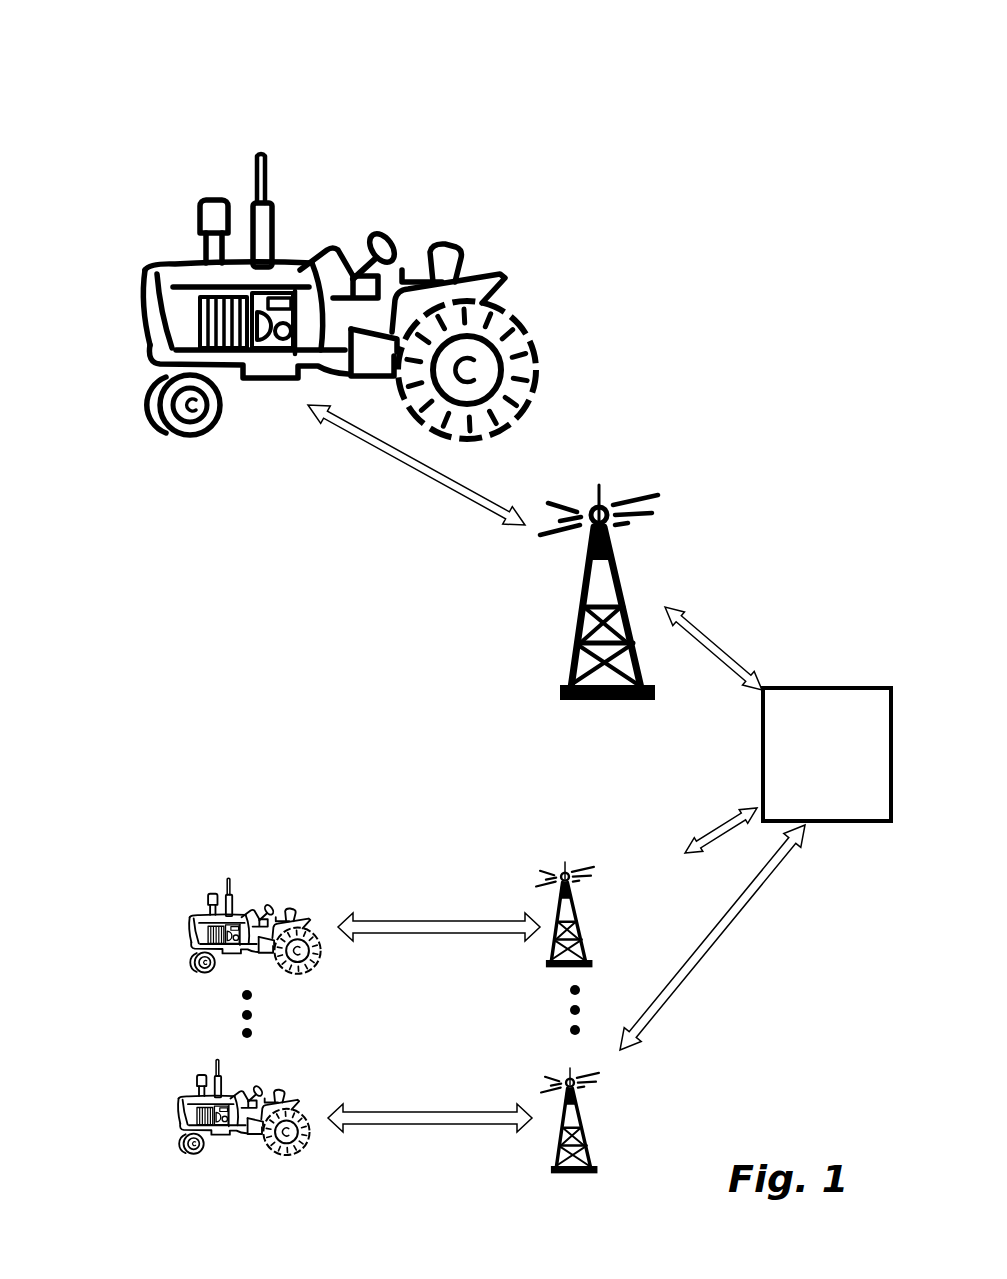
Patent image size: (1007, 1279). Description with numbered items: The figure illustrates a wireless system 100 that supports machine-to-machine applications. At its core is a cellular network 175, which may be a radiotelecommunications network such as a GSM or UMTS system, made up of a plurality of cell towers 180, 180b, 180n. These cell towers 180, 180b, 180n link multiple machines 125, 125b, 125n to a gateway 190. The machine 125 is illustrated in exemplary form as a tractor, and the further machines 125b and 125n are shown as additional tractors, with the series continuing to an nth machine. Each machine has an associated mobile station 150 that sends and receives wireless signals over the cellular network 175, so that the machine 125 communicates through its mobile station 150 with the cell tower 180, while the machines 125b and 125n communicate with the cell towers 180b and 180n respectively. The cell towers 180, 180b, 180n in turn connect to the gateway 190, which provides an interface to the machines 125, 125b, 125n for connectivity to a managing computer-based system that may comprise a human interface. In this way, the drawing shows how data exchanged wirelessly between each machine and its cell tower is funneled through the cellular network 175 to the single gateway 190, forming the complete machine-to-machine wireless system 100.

The wireless system 100 is at (150, 62).
The machine 125 is at (133, 198).
The mobile station 150 is at (276, 402).
The cellular network 175 is at (450, 558).
The cell tower 180 is at (628, 572).
The gateway 190 is at (806, 761).
The machine 125b is at (170, 911).
The machine 125n is at (163, 1089).
The cell tower 180b is at (592, 910).
The cell tower 180n is at (597, 1118).